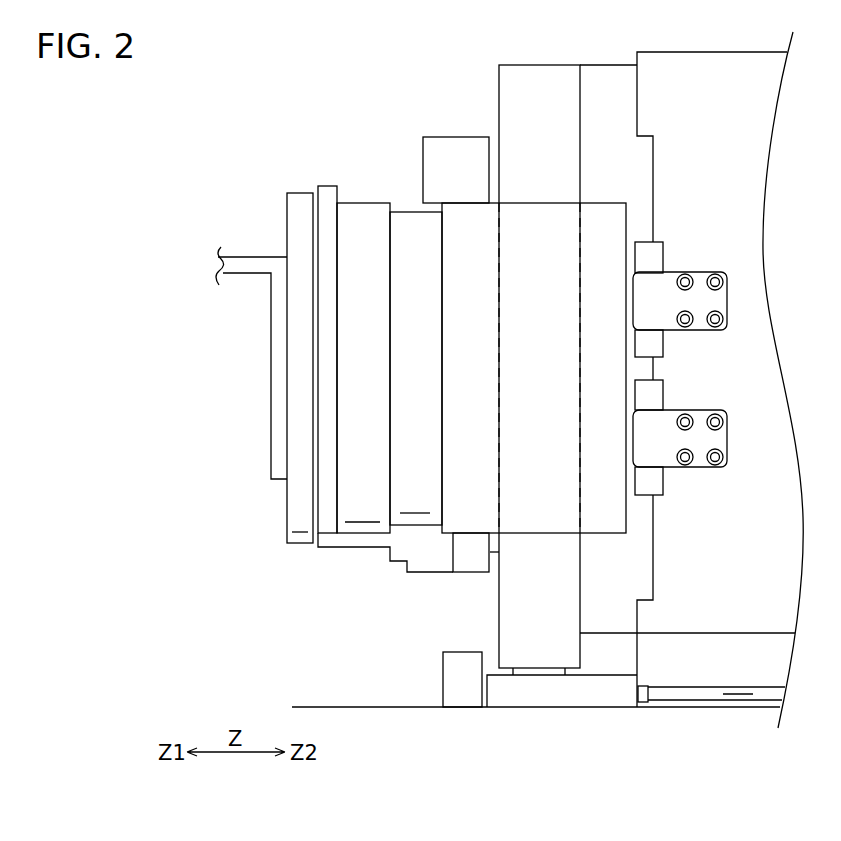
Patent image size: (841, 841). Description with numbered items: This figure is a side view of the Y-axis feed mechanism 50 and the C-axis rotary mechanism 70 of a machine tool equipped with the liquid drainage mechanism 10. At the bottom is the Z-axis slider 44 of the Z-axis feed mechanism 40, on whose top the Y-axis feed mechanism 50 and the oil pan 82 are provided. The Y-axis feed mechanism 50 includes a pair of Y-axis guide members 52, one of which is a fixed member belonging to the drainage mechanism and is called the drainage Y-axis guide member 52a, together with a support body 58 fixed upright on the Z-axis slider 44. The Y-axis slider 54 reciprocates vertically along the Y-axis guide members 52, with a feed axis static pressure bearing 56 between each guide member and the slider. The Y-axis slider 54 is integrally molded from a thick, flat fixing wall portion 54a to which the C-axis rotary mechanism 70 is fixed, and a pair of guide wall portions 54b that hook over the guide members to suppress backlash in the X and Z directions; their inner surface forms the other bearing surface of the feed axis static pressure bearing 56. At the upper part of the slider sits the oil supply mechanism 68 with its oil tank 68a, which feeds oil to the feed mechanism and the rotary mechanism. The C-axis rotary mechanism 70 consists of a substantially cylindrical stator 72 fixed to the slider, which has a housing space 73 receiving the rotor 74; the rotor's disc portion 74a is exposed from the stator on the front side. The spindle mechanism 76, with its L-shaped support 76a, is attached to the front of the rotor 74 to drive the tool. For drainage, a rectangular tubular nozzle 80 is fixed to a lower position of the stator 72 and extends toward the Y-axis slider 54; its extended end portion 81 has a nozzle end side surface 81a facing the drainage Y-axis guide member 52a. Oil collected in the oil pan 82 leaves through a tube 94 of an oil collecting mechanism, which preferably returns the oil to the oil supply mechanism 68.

The liquid drainage mechanism 10 is at (329, 580).
The Z-axis feed mechanism 40 is at (530, 673).
The Z-axis slider 44 is at (343, 707).
The Y-axis feed mechanism 50 is at (471, 608).
The Y-axis guide member 52 is at (538, 349).
The drainage Y-axis guide member 52a is at (499, 95).
The Y-axis slider 54 is at (537, 215).
The fixing wall portion 54a is at (442, 235).
The guide wall portion 54b is at (602, 203).
The feed axis static pressure bearing 56 is at (499, 338).
The support body 58 is at (767, 93).
The oil supply mechanism 68 is at (428, 134).
The oil tank 68a is at (445, 150).
The C-axis rotary mechanism 70 is at (284, 159).
The stator 72 is at (353, 203).
The housing space 73 is at (375, 448).
The rotor 74 is at (257, 358).
The disc portion 74a is at (300, 222).
The spindle mechanism 76 is at (237, 363).
The L-shaped support 76a is at (277, 362).
The nozzle 80 is at (381, 540).
The extended end portion 81 is at (478, 565).
The nozzle end side surface 81a is at (490, 552).
The oil pan 82 is at (572, 693).
The tube 94 is at (700, 692).